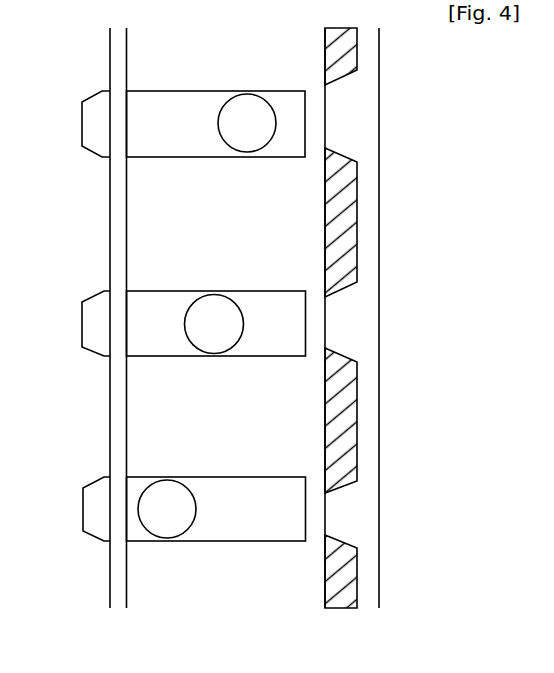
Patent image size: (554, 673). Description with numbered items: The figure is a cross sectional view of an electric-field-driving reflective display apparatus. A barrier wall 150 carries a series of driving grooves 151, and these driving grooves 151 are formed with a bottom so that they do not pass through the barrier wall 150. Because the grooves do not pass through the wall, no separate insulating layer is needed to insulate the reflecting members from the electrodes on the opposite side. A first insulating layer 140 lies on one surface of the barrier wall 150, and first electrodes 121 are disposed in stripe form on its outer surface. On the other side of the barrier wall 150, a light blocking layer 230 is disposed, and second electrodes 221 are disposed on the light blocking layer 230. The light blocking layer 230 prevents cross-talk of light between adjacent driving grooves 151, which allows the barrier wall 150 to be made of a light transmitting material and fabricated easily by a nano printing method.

The first insulating layer 140 is at (130, 222).
The driving grooves 151 is at (157, 293).
The first electrodes 121 is at (85, 322).
The barrier wall 150 is at (318, 255).
The second electrodes 221 is at (378, 107).
The light blocking layer 230 is at (355, 210).